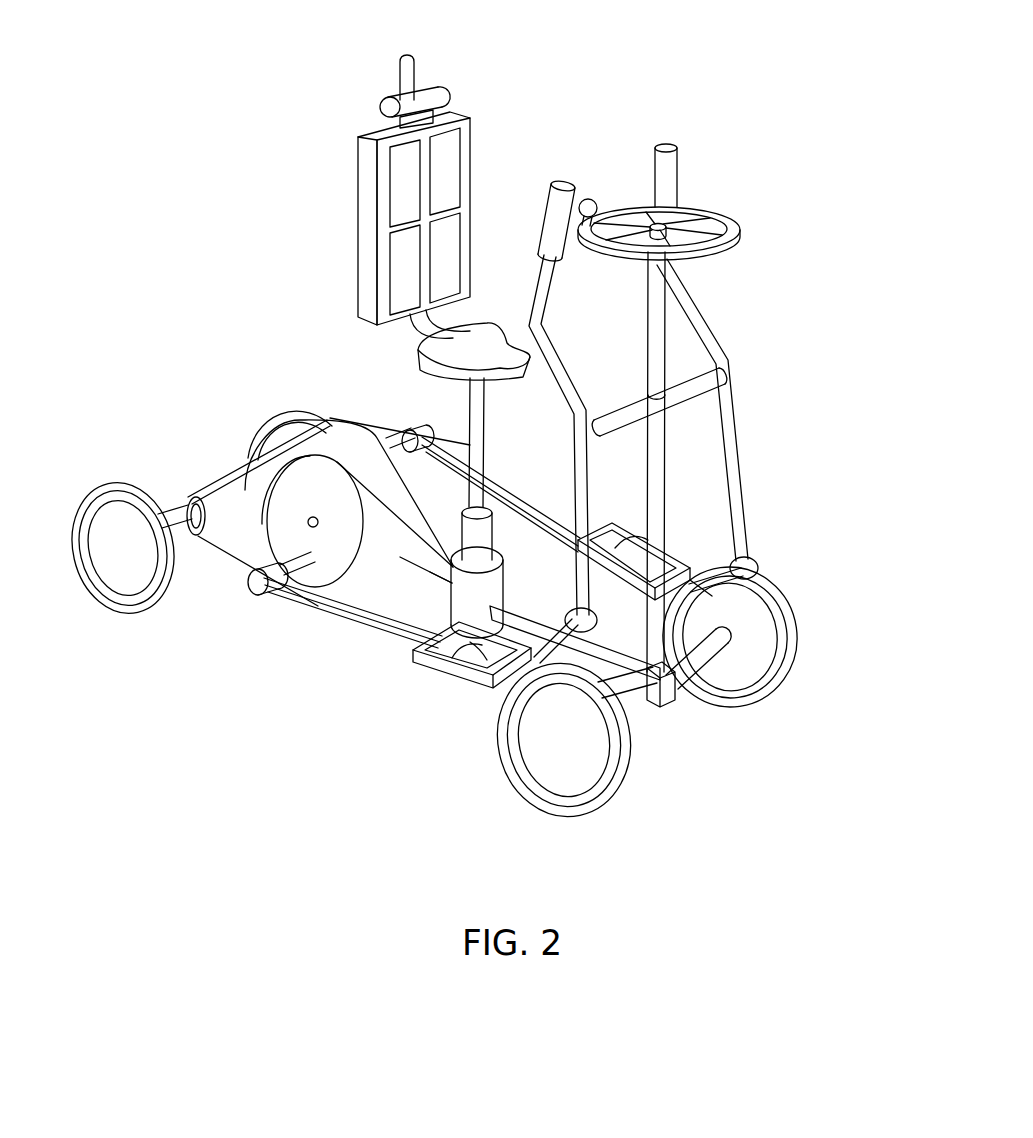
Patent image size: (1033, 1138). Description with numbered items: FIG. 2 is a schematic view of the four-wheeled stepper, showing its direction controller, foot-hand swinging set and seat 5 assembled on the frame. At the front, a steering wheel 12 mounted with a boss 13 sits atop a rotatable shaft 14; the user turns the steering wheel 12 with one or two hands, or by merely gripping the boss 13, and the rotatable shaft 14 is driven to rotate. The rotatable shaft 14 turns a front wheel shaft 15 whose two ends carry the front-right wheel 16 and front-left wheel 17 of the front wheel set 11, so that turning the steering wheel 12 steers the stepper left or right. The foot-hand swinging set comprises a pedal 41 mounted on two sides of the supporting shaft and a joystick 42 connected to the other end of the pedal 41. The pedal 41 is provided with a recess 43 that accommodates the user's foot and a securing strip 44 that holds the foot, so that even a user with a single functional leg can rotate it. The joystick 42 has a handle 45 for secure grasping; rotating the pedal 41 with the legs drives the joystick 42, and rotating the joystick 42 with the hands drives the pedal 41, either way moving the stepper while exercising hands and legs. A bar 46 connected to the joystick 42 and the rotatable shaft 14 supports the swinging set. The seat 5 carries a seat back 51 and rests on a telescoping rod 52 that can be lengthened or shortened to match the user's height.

The seat 5 is at (368, 356).
The front wheel set 11 is at (864, 708).
The steering wheel 12 is at (730, 230).
The boss 13 is at (597, 206).
The rotatable shaft 14 is at (658, 312).
The front wheel shaft 15 is at (703, 650).
The front-right wheel 16 is at (623, 768).
The front-left wheel 17 is at (780, 662).
The pedal 41 is at (430, 586).
The joystick 42 is at (583, 518).
The recess 43 is at (413, 653).
The securing strip 44 is at (623, 548).
The handle 45 is at (663, 145).
The bar 46 is at (697, 378).
The seat back 51 is at (368, 222).
The telescoping rod 52 is at (472, 430).